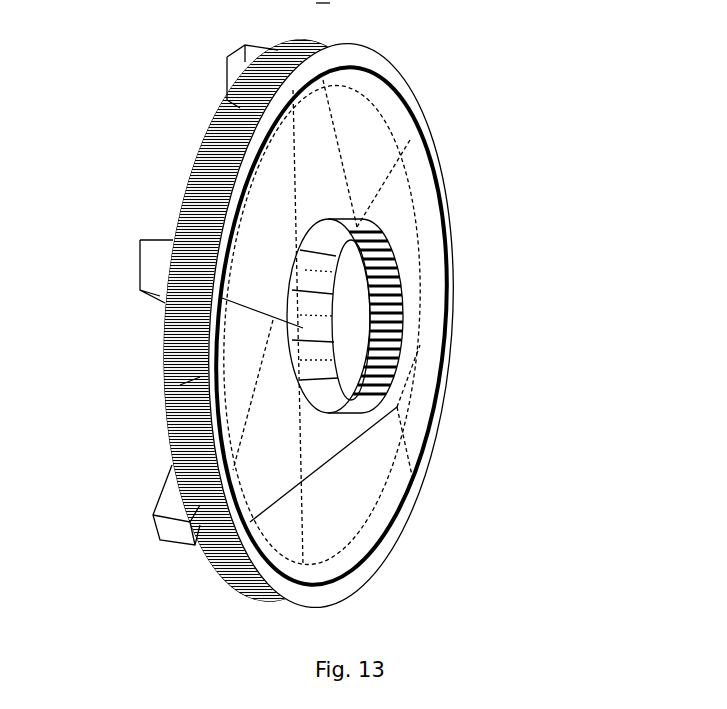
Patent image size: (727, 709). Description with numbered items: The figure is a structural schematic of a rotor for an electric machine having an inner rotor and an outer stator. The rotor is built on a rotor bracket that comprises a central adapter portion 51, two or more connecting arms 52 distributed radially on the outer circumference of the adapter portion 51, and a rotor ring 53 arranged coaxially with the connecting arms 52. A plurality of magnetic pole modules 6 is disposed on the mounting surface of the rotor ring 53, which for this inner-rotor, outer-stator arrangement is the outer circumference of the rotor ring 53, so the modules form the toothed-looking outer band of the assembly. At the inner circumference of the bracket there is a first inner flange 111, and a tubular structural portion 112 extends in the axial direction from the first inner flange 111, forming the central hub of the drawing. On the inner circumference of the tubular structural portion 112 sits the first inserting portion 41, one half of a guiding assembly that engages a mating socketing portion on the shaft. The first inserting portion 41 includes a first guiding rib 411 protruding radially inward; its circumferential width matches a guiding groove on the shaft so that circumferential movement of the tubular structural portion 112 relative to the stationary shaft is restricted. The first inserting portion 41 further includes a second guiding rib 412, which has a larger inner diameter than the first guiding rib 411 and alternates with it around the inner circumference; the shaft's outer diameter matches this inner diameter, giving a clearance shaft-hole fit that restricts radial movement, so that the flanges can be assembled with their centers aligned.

The magnetic pole modules 6 is at (207, 134).
The first inner flange 111 is at (300, 277).
The tubular structural portion 112 is at (180, 385).
The first inserting portion 41 is at (560, 190).
The first guiding rib 411 is at (407, 263).
The second guiding rib 412 is at (385, 330).
The adapter portion 51 is at (317, 433).
The connecting arms 52 is at (327, 153).
The rotor ring 53 is at (443, 177).